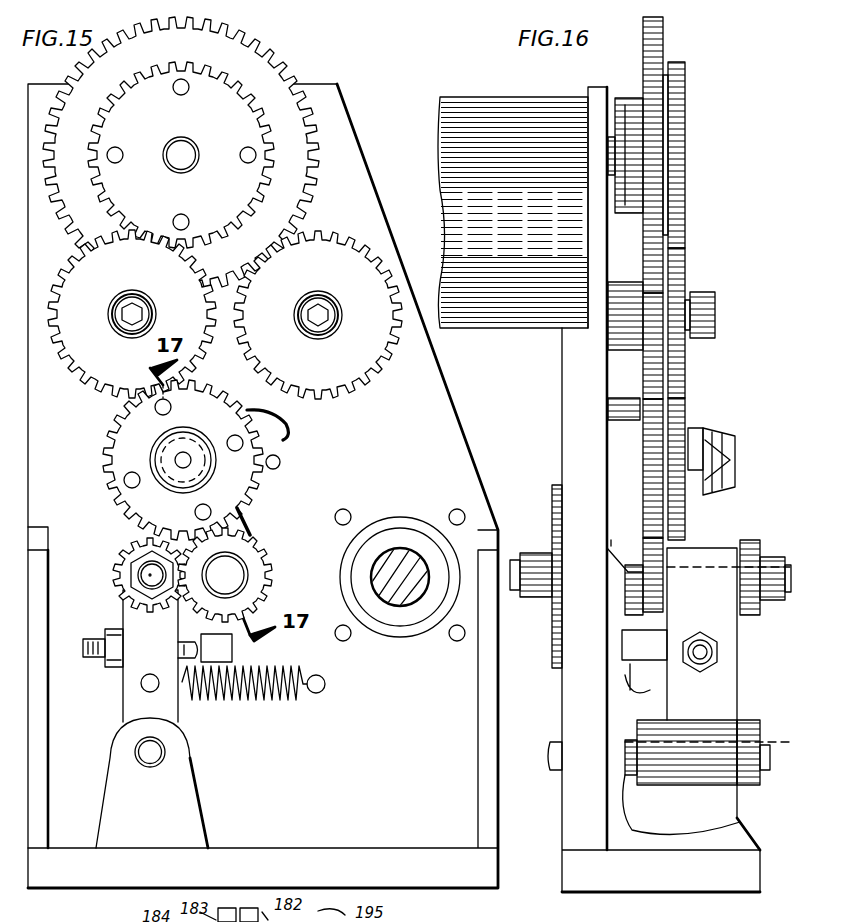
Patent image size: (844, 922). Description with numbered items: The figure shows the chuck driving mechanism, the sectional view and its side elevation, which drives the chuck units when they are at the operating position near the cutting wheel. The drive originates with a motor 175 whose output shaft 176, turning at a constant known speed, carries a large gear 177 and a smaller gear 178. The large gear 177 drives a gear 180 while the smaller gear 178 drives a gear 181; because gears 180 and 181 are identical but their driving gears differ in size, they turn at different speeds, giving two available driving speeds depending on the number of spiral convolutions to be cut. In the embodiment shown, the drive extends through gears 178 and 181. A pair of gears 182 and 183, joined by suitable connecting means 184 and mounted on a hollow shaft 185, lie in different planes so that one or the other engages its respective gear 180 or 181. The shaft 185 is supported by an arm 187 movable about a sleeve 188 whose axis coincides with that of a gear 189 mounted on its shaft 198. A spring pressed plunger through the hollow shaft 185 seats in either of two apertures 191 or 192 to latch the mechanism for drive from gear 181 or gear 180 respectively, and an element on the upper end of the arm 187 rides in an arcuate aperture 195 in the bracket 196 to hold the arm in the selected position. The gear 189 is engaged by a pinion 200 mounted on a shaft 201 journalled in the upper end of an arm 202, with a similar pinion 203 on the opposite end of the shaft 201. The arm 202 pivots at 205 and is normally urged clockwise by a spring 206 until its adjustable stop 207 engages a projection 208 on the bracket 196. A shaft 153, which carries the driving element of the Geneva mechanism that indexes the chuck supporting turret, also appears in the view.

In FIG. 15, the shaft 153 is at (398, 595).
In FIG. 16, the motor 175 is at (516, 97).
In FIG. 15, the output shaft 176 is at (184, 160).
In FIG. 16, the output shaft 176 is at (606, 162).
In FIG. 15, the large gear 177 is at (265, 52).
In FIG. 16, the large gear 177 is at (664, 26).
In FIG. 15, the smaller gear 178 is at (240, 112).
In FIG. 16, the smaller gear 178 is at (686, 101).
In FIG. 15, the gear 180 is at (368, 375).
In FIG. 16, the gear 180 is at (650, 364).
In FIG. 15, the gear 181 is at (72, 360).
In FIG. 16, the gear 181 is at (680, 356).
In FIG. 16, the gear 182 is at (650, 513).
In FIG. 15, the gear 183 is at (105, 445).
In FIG. 16, the gear 183 is at (684, 426).
In FIG. 15, the connecting means 184 is at (148, 444).
In FIG. 15, the shaft 185 is at (205, 465).
In FIG. 16, the shaft 185 is at (711, 461).
In FIG. 15, the arm 187 is at (252, 522).
In FIG. 16, the arm 187 is at (622, 478).
In FIG. 16, the sleeve 188 is at (556, 568).
In FIG. 15, the gear 189 is at (262, 548).
In FIG. 16, the gear 189 is at (660, 630).
In FIG. 15, the aperture 191 is at (188, 450).
In FIG. 15, the aperture 192 is at (278, 467).
In FIG. 15, the arcuate aperture 195 is at (284, 441).
In FIG. 15, the bracket 196 is at (442, 407).
In FIG. 16, the bracket 196 is at (563, 383).
In FIG. 15, the shaft 198 is at (270, 575).
In FIG. 16, the shaft 198 is at (513, 582).
In FIG. 15, the pinion 200 is at (118, 561).
In FIG. 16, the pinion 200 is at (664, 585).
In FIG. 15, the shaft 201 is at (132, 578).
In FIG. 16, the shaft 201 is at (788, 594).
In FIG. 15, the arm 202 is at (125, 621).
In FIG. 16, the arm 202 is at (697, 775).
In FIG. 15, the pinion 203 is at (138, 548).
In FIG. 16, the pinion 203 is at (762, 546).
In FIG. 15, the pivot 205 is at (150, 770).
In FIG. 16, the pivot 205 is at (552, 765).
In FIG. 15, the spring 206 is at (238, 700).
In FIG. 16, the spring 206 is at (650, 695).
In FIG. 15, the adjustable stop 207 is at (96, 658).
In FIG. 16, the adjustable stop 207 is at (718, 653).
In FIG. 15, the projection 208 is at (233, 650).
In FIG. 16, the projection 208 is at (638, 650).